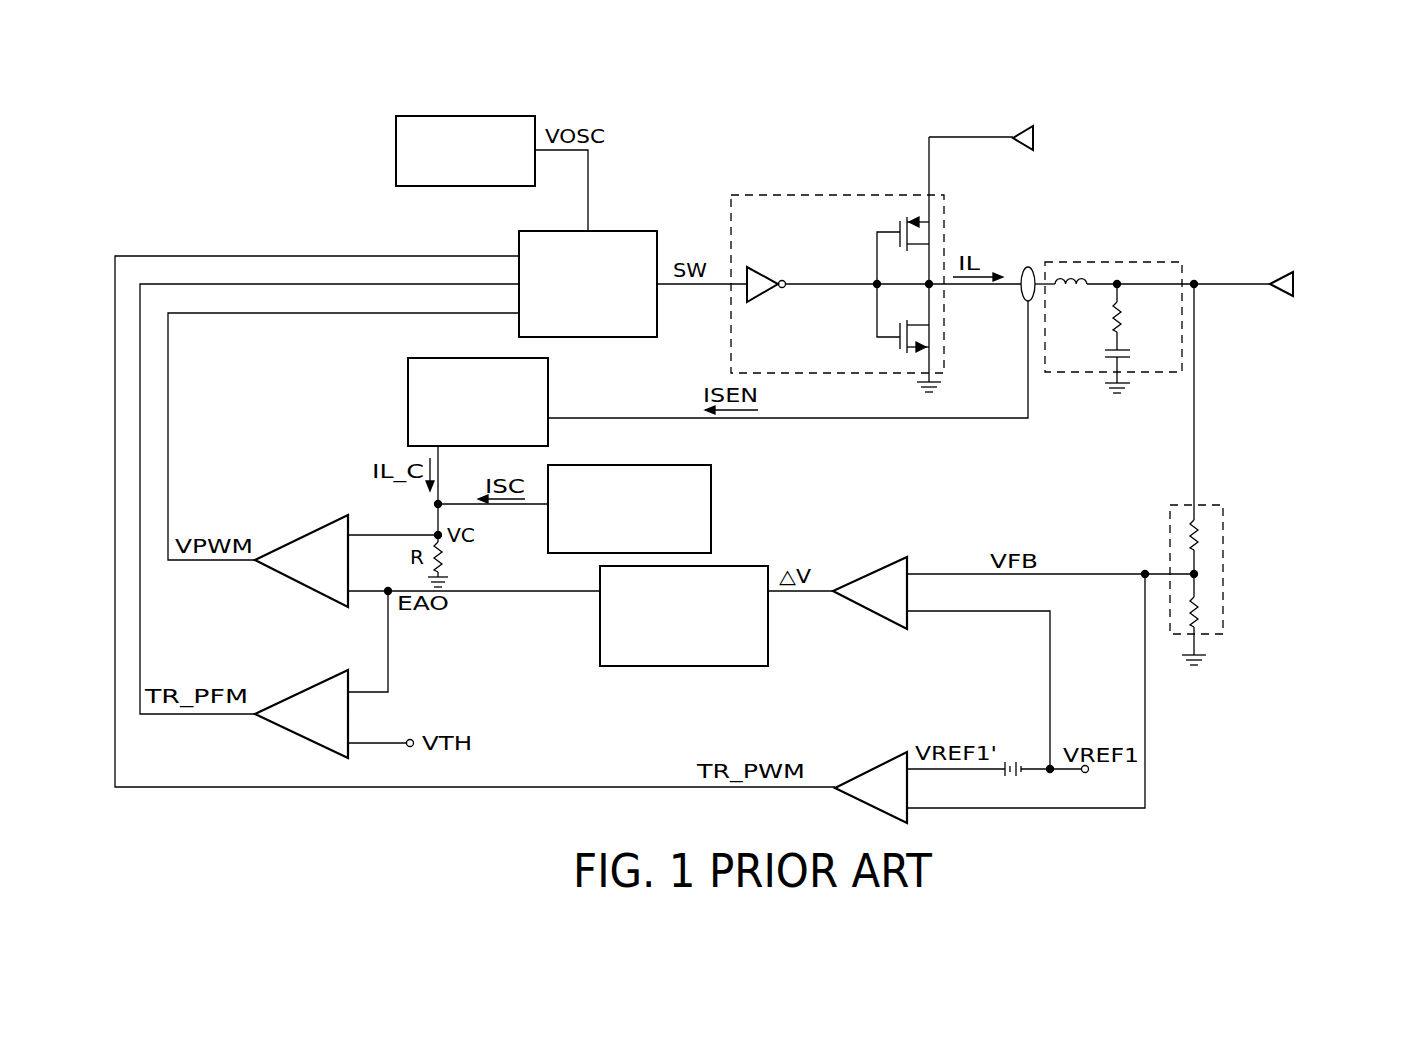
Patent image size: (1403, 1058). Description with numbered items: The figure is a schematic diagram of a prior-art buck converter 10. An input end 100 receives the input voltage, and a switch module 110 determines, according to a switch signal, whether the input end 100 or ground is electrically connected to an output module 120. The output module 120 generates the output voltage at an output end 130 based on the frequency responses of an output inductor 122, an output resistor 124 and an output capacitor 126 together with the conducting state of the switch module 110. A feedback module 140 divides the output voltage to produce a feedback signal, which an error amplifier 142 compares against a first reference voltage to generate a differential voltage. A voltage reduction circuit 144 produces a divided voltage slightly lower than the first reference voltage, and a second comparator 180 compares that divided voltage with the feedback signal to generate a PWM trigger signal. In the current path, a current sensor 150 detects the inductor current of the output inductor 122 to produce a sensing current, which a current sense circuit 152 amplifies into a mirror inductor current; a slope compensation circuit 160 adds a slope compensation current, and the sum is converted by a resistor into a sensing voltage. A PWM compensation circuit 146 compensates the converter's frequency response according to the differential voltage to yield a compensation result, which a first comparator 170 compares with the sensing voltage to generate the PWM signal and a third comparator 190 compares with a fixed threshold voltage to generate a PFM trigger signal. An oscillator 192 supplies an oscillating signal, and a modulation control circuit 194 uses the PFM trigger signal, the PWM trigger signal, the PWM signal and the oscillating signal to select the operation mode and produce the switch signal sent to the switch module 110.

The buck converter 10 is at (1300, 102).
The input end 100 is at (1019, 127).
The switch module 110 is at (797, 195).
The output module 120 is at (1145, 262).
The output inductor 122 is at (1071, 295).
The output resistor 124 is at (1126, 313).
The output capacitor 126 is at (1126, 353).
The output end 130 is at (1278, 277).
The feedback module 140 is at (1219, 505).
The error amplifier 142 is at (874, 572).
The voltage reduction circuit 144 is at (1015, 755).
The pulse width modulation (PWM) compensation circuit 146 is at (743, 566).
The current sensor 150 is at (1026, 270).
The current sense circuit 152 is at (440, 358).
The slope compensation circuit 160 is at (696, 465).
The first comparator 170 is at (304, 536).
The second comparator 180 is at (874, 766).
The third comparator 190 is at (304, 691).
The oscillator 192 is at (505, 116).
The modulation control circuit 194 is at (644, 231).